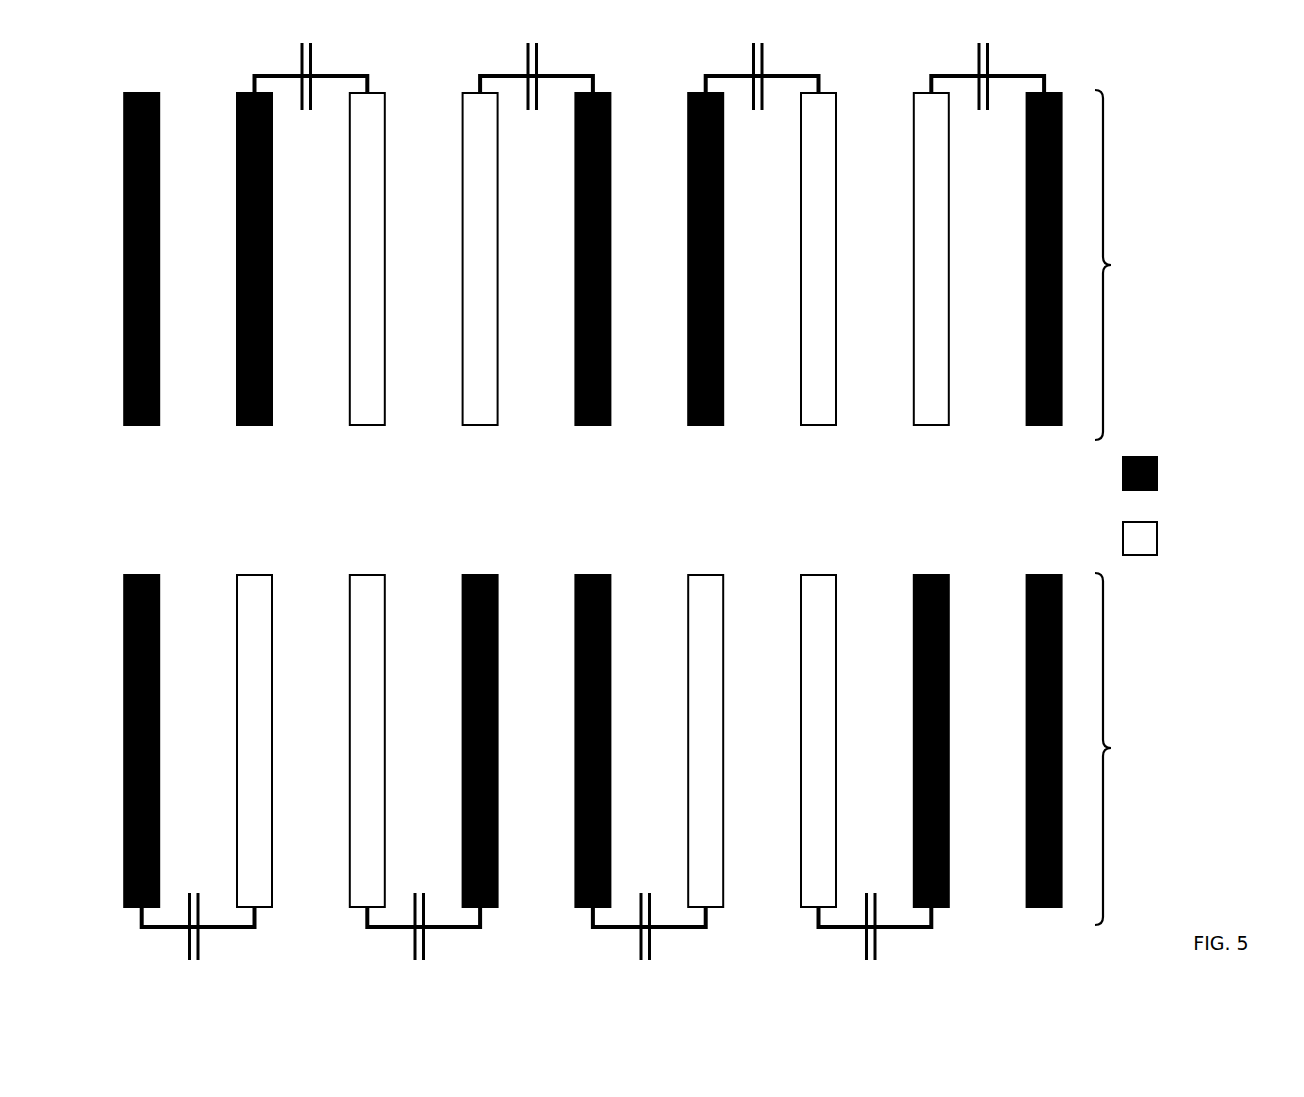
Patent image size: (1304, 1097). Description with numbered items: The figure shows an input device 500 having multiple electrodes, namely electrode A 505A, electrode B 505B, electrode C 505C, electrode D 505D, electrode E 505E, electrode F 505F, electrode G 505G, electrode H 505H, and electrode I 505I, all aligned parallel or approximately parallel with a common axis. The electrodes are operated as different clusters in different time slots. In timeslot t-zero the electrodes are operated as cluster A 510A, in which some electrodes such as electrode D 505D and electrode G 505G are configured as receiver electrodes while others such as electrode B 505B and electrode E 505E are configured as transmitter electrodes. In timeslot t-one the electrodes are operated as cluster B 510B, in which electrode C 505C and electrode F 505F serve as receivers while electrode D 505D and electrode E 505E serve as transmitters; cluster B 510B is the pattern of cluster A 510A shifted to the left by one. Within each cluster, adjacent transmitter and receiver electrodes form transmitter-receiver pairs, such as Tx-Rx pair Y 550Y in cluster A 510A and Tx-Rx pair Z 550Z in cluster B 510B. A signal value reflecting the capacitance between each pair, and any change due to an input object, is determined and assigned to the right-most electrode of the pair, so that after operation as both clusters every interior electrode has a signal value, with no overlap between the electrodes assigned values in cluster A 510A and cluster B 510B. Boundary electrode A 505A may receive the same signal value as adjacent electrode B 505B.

The input device 500 is at (1203, 151).
The electrode A 505A is at (142, 440).
The electrode B 505B is at (254, 440).
The electrode C 505C is at (367, 440).
The electrode D 505D is at (480, 440).
The electrode E 505E is at (593, 440).
The electrode F 505F is at (706, 440).
The electrode G 505G is at (818, 440).
The electrode H 505H is at (931, 440).
The electrode I 505I is at (1044, 440).
The cluster A 510A is at (1153, 265).
The cluster B 510B is at (1153, 749).
The Tx-Rx pair Y 550Y is at (504, 262).
The Tx-Rx pair Z 550Z is at (619, 717).